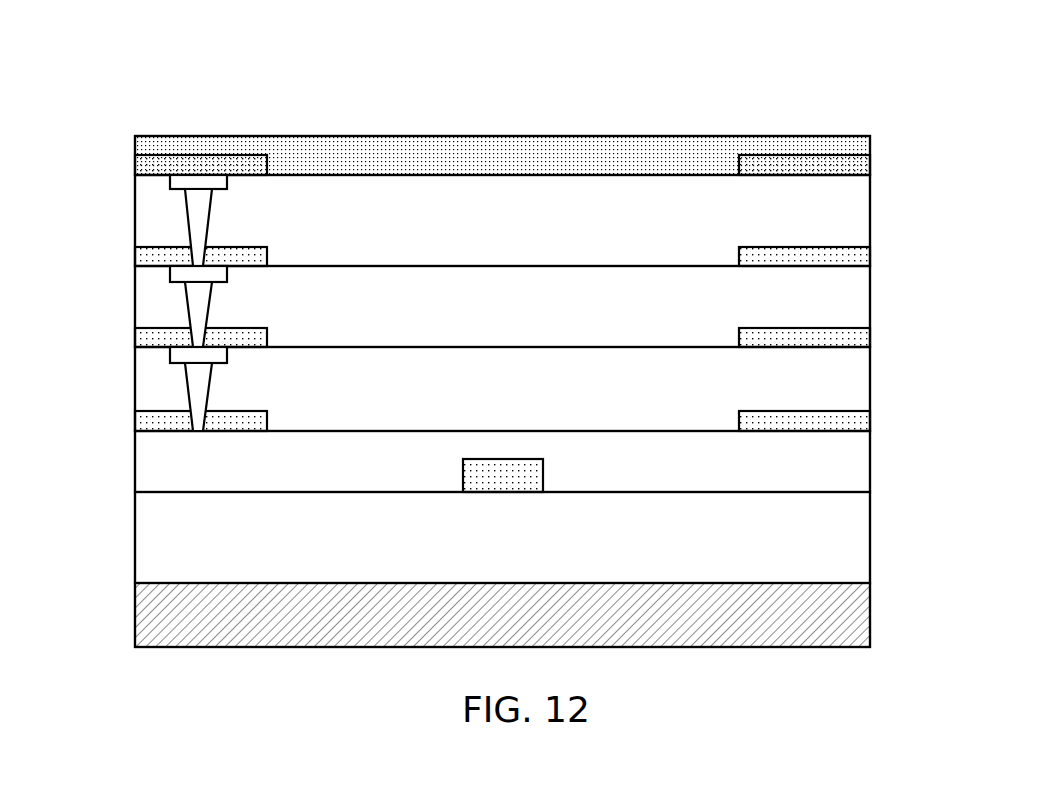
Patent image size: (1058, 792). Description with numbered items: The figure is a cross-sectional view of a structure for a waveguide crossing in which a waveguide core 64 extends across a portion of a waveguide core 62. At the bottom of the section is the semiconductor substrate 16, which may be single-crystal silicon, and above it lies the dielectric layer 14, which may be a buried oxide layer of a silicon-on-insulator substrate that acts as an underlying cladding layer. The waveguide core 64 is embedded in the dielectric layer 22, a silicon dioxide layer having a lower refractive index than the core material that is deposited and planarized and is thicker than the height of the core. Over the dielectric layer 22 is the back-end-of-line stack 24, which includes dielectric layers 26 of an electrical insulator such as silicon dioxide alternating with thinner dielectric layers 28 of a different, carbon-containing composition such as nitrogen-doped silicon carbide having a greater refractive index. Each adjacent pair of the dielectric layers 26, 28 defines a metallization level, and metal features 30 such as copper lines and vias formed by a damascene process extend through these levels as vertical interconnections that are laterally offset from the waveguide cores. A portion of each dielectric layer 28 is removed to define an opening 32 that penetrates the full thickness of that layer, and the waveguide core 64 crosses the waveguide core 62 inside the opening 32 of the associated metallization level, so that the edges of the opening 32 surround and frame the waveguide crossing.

The dielectric layer 14 is at (820, 552).
The semiconductor substrate 16 is at (820, 618).
The dielectric layer 22 is at (820, 468).
The back-end-of-line stack 24 is at (500, 291).
The dielectric layers 26 is at (820, 197).
The dielectric layers 28 is at (820, 168).
The metal features 30 is at (197, 388).
The opening 32 is at (265, 78).
The waveguide core 62 is at (167, 147).
The waveguide core 64 is at (488, 476).